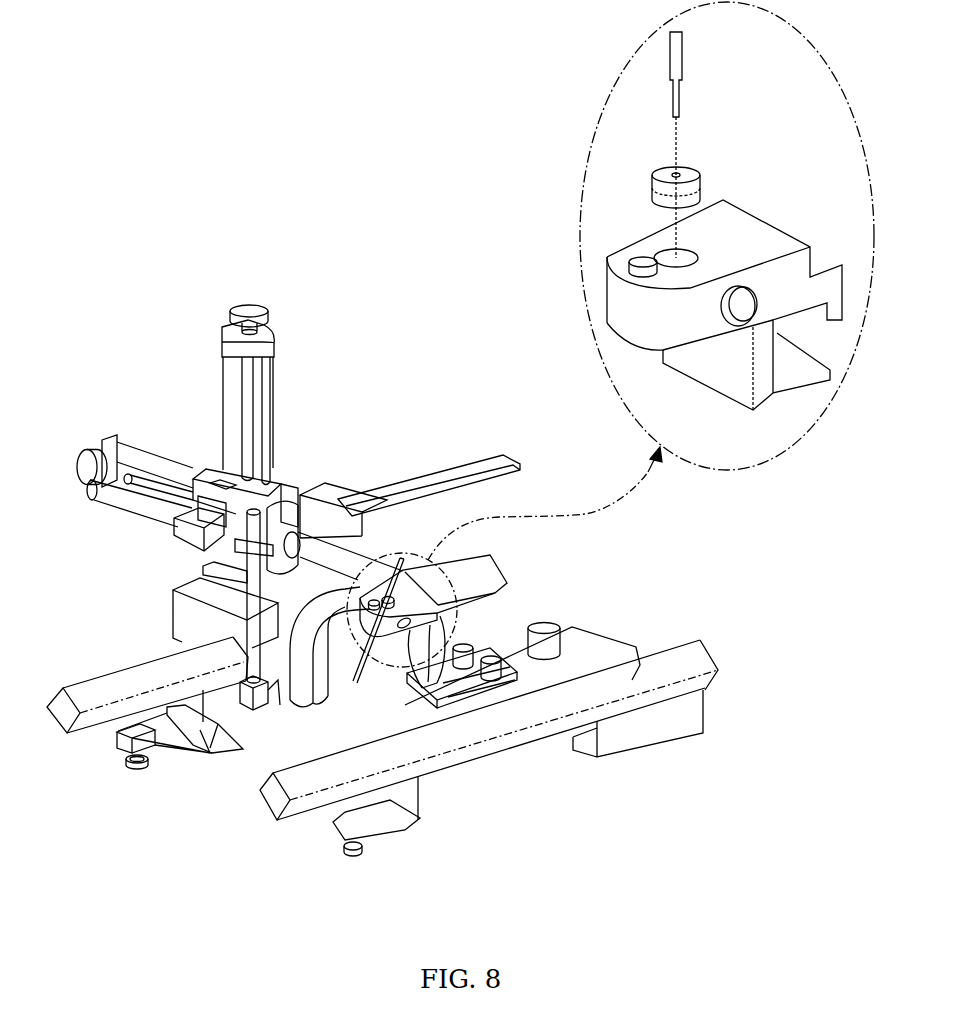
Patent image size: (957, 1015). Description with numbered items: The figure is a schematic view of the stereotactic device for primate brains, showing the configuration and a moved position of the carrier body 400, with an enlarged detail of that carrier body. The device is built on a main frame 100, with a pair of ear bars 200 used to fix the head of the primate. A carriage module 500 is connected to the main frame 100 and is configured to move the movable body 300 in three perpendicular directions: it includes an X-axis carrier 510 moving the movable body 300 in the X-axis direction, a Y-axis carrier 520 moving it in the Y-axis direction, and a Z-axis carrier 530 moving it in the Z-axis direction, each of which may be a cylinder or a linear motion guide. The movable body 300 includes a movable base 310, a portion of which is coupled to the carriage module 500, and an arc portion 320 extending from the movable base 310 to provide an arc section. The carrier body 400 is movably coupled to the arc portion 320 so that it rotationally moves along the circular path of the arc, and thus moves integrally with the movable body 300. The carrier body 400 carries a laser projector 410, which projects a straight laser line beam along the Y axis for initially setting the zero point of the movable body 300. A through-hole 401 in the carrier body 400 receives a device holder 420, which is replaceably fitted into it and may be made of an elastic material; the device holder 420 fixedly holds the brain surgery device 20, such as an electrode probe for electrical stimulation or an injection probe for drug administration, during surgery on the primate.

The brain surgery device 20 is at (403, 558).
The main frame 100 is at (87, 693).
The ear bars 200 is at (198, 730).
The movable body 300 is at (253, 860).
The movable base 310 is at (278, 707).
The arc portion 320 is at (303, 710).
The carrier body 400 is at (440, 575).
The through-hole 401 is at (670, 250).
The laser projector 410 is at (374, 598).
The device holder 420 is at (392, 655).
The carriage module 500 is at (212, 419).
The X-axis carrier 510 is at (150, 462).
The Y-axis carrier 520 is at (197, 587).
The Z-axis carrier 530 is at (232, 383).